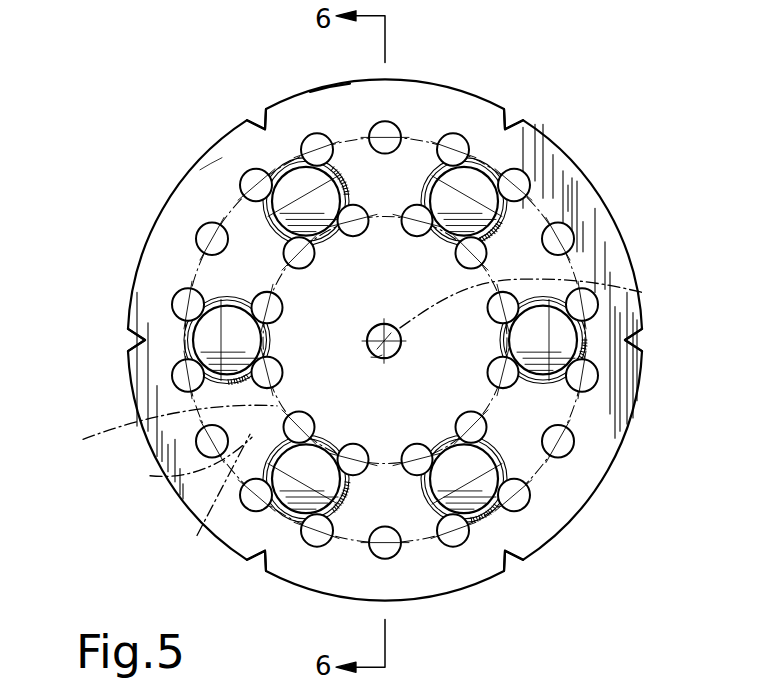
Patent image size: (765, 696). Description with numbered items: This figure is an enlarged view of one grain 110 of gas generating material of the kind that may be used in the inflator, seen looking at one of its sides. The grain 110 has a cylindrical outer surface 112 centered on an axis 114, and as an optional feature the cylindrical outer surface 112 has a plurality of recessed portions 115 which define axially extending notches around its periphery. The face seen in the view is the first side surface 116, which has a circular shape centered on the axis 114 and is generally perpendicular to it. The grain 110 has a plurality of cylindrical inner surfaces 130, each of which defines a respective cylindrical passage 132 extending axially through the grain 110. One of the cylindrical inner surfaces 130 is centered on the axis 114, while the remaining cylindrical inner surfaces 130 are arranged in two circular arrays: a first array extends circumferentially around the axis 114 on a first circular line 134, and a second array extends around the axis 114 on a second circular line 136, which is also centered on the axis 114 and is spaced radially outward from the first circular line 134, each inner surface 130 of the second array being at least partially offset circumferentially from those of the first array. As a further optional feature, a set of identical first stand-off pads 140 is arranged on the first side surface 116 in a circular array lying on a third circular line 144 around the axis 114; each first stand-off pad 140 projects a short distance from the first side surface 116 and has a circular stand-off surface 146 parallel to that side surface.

The grain 110 is at (118, 104).
The cylindrical outer surface 112 is at (331, 87).
The axis 114 is at (643, 293).
The recessed portions 115 is at (253, 122).
The first side surface 116 is at (212, 180).
The cylindrical inner surfaces 130 is at (193, 302).
The cylindrical passage 132 is at (197, 221).
The first circular line 134 is at (152, 431).
The second circular line 136 is at (197, 533).
The first stand-off pads 140 is at (502, 156).
The third circular line 144 is at (150, 474).
The circular stand-off surface 146 is at (548, 182).